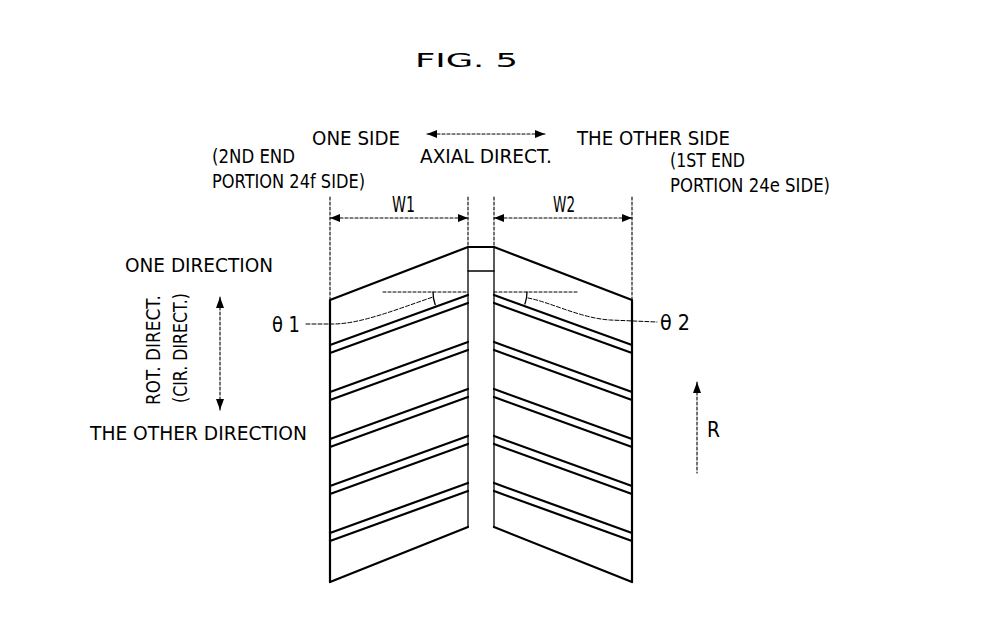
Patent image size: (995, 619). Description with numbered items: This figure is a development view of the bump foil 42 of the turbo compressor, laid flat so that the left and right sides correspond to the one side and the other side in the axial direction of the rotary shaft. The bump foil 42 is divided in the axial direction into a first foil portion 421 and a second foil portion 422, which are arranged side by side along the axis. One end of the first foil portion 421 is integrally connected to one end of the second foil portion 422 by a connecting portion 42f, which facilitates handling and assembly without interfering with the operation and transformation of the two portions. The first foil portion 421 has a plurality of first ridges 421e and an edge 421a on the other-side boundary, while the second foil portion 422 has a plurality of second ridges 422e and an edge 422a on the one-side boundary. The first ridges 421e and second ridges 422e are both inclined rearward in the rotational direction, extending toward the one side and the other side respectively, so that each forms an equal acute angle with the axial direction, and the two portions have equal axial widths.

The bump foil 42 is at (658, 292).
The connecting portion 42f is at (485, 258).
The first foil portion 421 is at (347, 512).
The edge 421a is at (478, 517).
The first ridges 421e is at (382, 468).
The second foil portion 422 is at (615, 507).
The edge 422a is at (481, 508).
The second ridges 422e is at (593, 382).